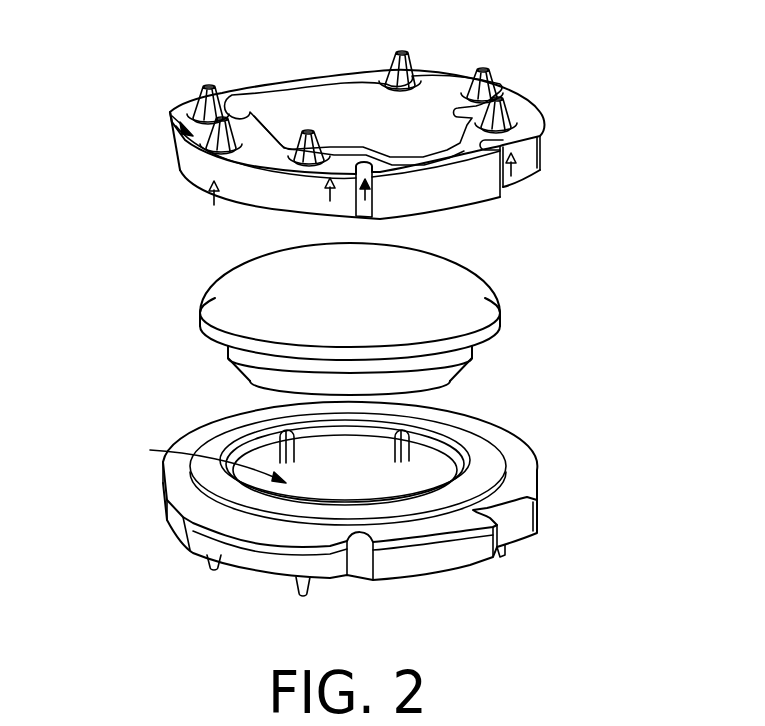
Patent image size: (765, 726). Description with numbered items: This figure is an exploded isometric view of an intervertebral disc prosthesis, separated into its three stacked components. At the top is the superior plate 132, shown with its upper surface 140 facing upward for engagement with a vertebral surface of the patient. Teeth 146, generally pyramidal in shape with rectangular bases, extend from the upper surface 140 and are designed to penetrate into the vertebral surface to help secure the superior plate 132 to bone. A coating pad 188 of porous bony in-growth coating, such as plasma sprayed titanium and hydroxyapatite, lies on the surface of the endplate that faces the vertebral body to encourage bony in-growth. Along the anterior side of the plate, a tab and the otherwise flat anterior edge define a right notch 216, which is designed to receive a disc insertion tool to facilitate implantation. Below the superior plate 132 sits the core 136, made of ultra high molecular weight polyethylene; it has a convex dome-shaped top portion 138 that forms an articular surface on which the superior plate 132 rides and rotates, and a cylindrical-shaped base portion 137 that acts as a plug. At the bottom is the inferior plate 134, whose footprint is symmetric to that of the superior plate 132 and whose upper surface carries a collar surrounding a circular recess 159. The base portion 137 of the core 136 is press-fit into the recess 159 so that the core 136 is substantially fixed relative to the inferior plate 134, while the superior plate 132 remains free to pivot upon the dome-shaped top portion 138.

The superior plate 132 is at (527, 108).
The inferior plate 134 is at (520, 474).
The core 136 is at (470, 303).
The base portion 137 is at (278, 378).
The dome-shaped top portion 138 is at (260, 292).
The upper surface 140 is at (170, 113).
The teeth 146 is at (200, 98).
The circular recess 159 is at (150, 450).
The coating pad 188 is at (418, 107).
The right notch 216 is at (364, 212).